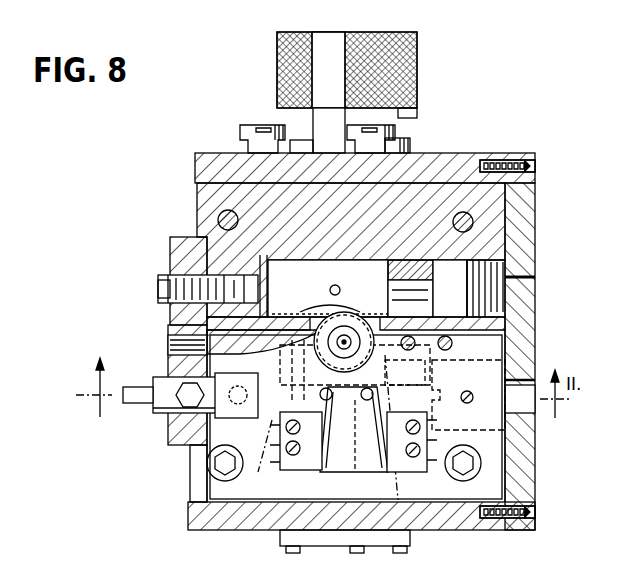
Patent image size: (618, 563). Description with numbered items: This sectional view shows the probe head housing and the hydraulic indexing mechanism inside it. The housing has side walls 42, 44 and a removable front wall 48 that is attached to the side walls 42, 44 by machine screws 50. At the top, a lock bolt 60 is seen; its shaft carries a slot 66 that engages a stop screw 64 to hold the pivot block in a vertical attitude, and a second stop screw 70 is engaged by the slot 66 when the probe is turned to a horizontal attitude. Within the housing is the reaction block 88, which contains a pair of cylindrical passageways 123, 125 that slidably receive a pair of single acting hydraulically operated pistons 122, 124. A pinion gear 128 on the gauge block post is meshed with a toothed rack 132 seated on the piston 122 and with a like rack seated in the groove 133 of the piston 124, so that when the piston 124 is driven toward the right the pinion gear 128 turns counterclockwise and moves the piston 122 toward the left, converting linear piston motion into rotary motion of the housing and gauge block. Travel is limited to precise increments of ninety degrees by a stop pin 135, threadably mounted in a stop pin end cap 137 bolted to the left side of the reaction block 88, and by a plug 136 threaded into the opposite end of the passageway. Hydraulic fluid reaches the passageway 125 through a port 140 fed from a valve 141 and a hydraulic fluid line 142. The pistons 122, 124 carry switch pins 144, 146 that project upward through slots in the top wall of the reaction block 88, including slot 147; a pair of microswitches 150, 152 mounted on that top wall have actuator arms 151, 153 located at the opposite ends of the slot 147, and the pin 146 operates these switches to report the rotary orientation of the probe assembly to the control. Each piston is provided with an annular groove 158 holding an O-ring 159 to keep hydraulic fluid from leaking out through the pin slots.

The side wall 42 is at (436, 158).
The side wall 44 is at (426, 530).
The front wall 48 is at (536, 470).
The machine screws 50 is at (538, 166).
The lock bolt 60 is at (417, 74).
The stop screw 64 is at (410, 128).
The slot 66 is at (328, 115).
The second stop screw 70 is at (240, 132).
The reaction block 88 is at (204, 465).
The piston 122 is at (375, 301).
The cylindrical passageway 123 is at (392, 270).
The piston 124 is at (364, 441).
The cylindrical passageway 125 is at (315, 427).
The pinion gear 128 is at (394, 318).
The toothed rack 132 is at (310, 294).
The slot or groove 133 is at (405, 381).
The stop pin 135 is at (162, 298).
The plug 136 is at (463, 285).
The stop pin end cap 137 is at (176, 254).
The port 140 is at (235, 405).
The valve 141 is at (162, 382).
The hydraulic fluid line 142 is at (140, 402).
The switch pin 144 is at (336, 286).
The switch pin 146 is at (330, 392).
The slot 147 is at (339, 410).
The microswitch 150 is at (396, 470).
The actuator arm 151 is at (468, 395).
The microswitch 152 is at (312, 472).
The actuator arm 153 is at (292, 396).
The annular groove 158 is at (229, 232).
The O-ring 159 is at (270, 270).